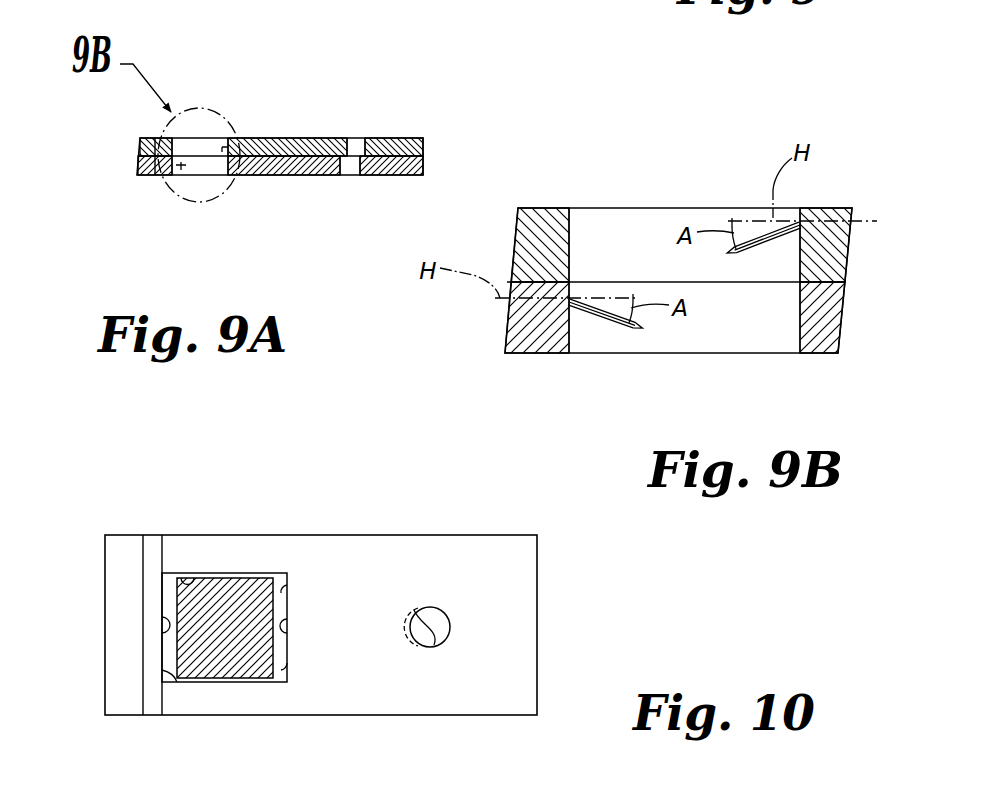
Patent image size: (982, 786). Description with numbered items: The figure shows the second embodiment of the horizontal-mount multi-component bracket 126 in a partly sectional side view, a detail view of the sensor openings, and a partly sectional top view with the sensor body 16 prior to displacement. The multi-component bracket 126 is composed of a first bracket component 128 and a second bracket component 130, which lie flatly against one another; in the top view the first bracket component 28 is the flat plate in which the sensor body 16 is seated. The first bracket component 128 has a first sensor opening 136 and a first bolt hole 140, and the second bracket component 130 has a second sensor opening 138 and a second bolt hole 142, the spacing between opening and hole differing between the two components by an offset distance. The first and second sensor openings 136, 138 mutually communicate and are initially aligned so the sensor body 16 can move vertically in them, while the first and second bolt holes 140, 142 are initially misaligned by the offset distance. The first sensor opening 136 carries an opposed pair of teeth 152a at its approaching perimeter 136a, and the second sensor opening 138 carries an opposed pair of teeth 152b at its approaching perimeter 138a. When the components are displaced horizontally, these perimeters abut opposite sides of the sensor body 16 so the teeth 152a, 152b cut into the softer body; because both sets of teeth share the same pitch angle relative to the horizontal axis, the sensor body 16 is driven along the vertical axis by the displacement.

In FIG. 10, the sensor body 16 is at (215, 577).
In FIG. 10, the first bracket component 28 is at (322, 535).
In FIG. 10, the multi-component bracket 126 is at (314, 718).
In FIG. 9A, the first bracket component 128 is at (331, 138).
In FIG. 9A, the second bracket component 130 is at (296, 138).
In FIG. 9A, the first sensor opening 136 is at (191, 138).
In FIG. 9B, the first sensor opening 136 is at (587, 215).
In FIG. 10, the first sensor opening 136 is at (184, 580).
In FIG. 9B, the approaching perimeter 136a is at (800, 266).
In FIG. 10, the approaching perimeter 136a is at (290, 625).
In FIG. 9A, the second sensor opening 138 is at (198, 167).
In FIG. 9B, the second sensor opening 138 is at (665, 338).
In FIG. 9B, the approaching perimeter 138a is at (569, 333).
In FIG. 10, the approaching perimeter 138a is at (161, 628).
In FIG. 9A, the first bolt hole 140 is at (358, 138).
In FIG. 10, the first bolt hole 140 is at (427, 648).
In FIG. 9A, the second bolt hole 142 is at (353, 175).
In FIG. 10, the second bolt hole 142 is at (414, 610).
In FIG. 9A, the teeth 152a is at (222, 147).
In FIG. 10, the teeth 152a is at (290, 597).
In FIG. 9A, the teeth 152b is at (182, 166).
In FIG. 10, the teeth 152b is at (166, 576).